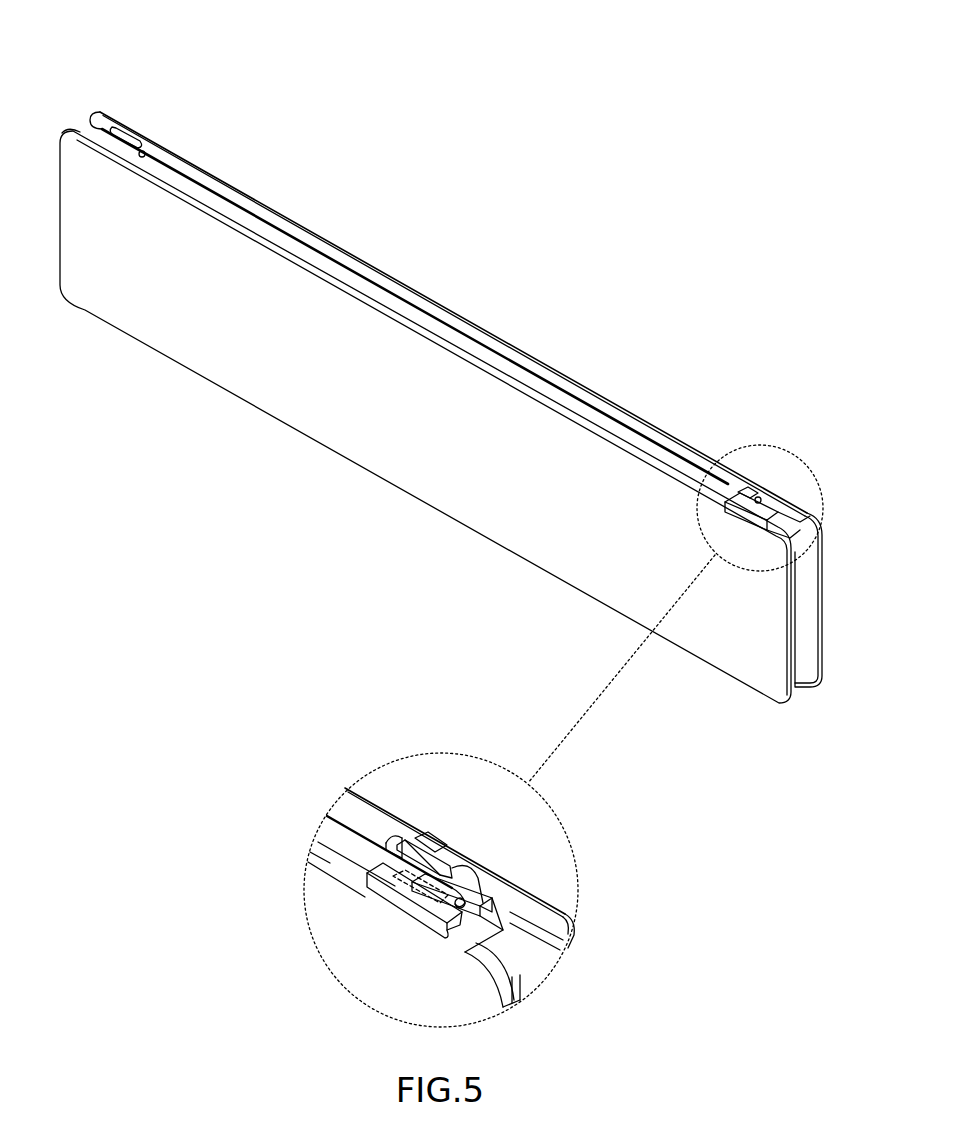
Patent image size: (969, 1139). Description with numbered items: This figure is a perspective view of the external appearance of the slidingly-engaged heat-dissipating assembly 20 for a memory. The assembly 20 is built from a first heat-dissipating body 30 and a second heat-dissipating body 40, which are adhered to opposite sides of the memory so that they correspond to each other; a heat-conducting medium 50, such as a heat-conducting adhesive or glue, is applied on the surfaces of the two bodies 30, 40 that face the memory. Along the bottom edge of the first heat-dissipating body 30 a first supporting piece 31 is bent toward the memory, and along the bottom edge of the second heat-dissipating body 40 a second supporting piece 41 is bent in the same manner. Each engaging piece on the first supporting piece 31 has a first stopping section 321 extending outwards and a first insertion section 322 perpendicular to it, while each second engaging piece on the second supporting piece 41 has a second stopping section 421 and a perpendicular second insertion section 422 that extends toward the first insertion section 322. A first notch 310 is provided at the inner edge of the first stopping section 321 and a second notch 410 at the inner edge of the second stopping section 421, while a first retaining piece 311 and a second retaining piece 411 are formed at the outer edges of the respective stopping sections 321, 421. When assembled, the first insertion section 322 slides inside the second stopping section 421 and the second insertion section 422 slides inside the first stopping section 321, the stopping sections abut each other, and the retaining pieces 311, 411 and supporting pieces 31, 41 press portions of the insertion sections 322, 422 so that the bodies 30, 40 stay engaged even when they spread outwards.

The heat-dissipating assembly 20 is at (429, 38).
The first heat-dissipating body 30 is at (440, 296).
The first supporting piece 31 is at (505, 348).
The first notch 310 is at (387, 847).
The first retaining piece 311 is at (100, 120).
The first stopping section 321 is at (124, 142).
The first insertion section 322 is at (415, 913).
The second heat-dissipating body 40 is at (366, 476).
The second supporting piece 41 is at (355, 280).
The second notch 410 is at (493, 868).
The second retaining piece 411 is at (90, 128).
The second stopping section 421 is at (142, 152).
The second insertion section 422 is at (430, 827).
The heat-conducting medium 50 is at (794, 645).